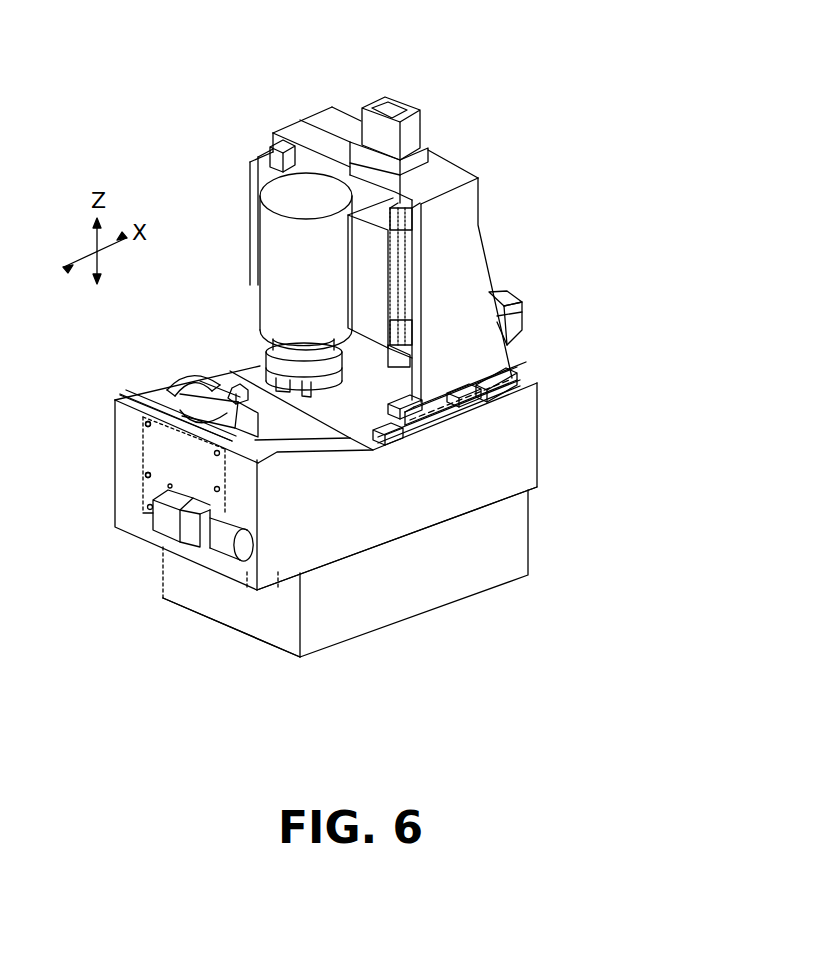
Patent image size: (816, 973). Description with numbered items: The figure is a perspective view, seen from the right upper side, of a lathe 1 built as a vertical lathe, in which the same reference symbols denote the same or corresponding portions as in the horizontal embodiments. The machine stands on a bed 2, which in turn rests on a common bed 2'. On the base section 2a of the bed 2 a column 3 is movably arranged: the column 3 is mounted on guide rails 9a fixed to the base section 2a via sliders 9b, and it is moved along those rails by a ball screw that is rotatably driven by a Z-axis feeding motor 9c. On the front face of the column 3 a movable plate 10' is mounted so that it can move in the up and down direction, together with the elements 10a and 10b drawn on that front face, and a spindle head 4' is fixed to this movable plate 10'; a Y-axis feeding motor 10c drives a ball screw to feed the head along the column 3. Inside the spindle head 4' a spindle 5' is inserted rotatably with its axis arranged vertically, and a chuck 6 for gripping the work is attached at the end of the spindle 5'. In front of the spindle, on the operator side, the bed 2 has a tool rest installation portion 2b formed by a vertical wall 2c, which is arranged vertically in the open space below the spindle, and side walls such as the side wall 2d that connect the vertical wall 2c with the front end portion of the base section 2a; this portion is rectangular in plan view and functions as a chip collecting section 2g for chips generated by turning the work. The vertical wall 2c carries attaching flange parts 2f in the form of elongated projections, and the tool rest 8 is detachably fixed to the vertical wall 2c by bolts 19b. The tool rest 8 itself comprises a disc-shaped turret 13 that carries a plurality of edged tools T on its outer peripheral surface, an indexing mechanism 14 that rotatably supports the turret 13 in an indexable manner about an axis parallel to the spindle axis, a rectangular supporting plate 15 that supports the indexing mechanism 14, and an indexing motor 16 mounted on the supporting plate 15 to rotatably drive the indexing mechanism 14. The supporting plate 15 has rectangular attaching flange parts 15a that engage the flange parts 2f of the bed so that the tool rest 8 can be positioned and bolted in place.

The lathe 1 is at (470, 68).
The bed 2 is at (353, 478).
The base section 2a is at (528, 458).
The tool rest installation portion 2b is at (312, 720).
The vertical wall 2c is at (247, 572).
The side wall 2d is at (278, 572).
The attaching flange part 2f is at (152, 390).
The chip collecting section 2g is at (320, 444).
The common bed 2' is at (378, 567).
The column 3 is at (491, 259).
The spindle head 4' is at (274, 245).
The spindle 5' is at (271, 326).
The chuck 6 is at (273, 363).
The tool rest 8 is at (140, 521).
The guide rail 9a is at (453, 380).
The slider 9b is at (488, 400).
The Z-axis feeding motor 9c is at (525, 312).
The Z-axis slide head 10a is at (406, 198).
The Z-axis guide rails 10b is at (416, 231).
The Y-axis feeding motor 10c is at (386, 98).
The movable plate 10' is at (377, 309).
The turret 13 is at (207, 400).
The indexing mechanism 14 is at (180, 410).
The supporting plate 15 is at (130, 458).
The attaching flange part 15a is at (142, 482).
The indexing motor 16 is at (225, 554).
The bolt 19b is at (126, 402).
The edged tool T is at (242, 392).